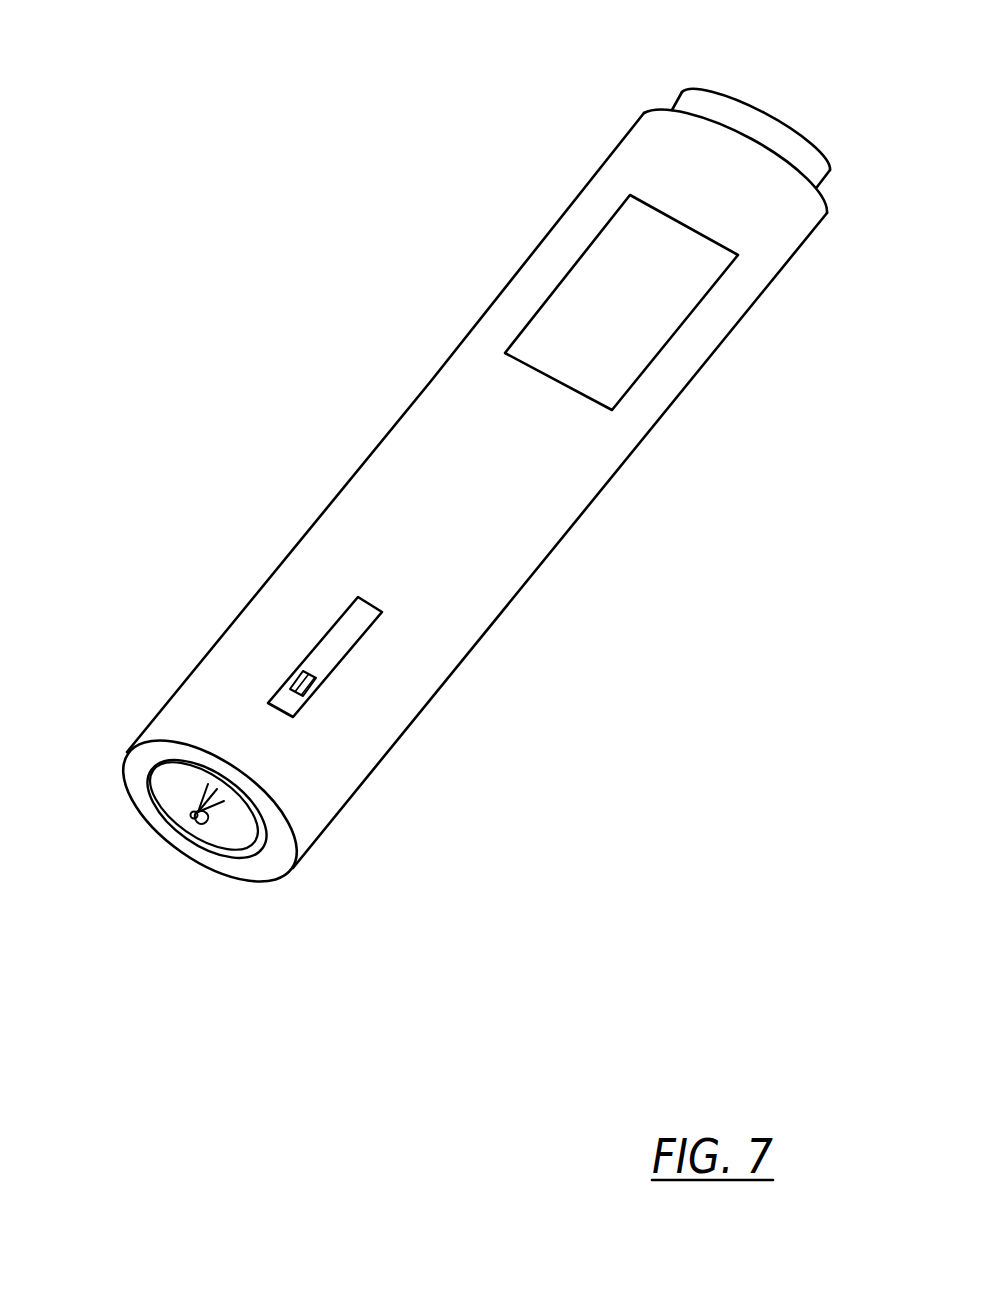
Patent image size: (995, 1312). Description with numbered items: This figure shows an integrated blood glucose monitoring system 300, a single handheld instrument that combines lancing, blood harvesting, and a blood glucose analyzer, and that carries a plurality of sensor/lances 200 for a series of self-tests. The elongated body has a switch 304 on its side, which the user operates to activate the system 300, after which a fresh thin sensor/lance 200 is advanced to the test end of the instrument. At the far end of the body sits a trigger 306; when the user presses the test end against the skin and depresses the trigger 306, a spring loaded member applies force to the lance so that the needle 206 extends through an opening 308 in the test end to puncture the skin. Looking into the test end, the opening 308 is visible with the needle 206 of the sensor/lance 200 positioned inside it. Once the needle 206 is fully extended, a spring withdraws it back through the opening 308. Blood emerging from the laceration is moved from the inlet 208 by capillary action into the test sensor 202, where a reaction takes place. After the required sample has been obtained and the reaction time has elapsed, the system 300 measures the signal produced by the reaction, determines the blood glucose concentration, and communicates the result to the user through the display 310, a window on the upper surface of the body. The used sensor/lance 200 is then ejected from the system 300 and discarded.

The integrated blood glucose monitoring system 300 is at (138, 93).
The trigger 306 is at (803, 127).
The display 310 is at (637, 352).
The switch 304 is at (315, 676).
The opening 308 is at (252, 853).
The test sensor 202 is at (177, 793).
The inlet 208 is at (199, 810).
The needle 206 is at (199, 817).
The sensor/lance 200 is at (172, 835).